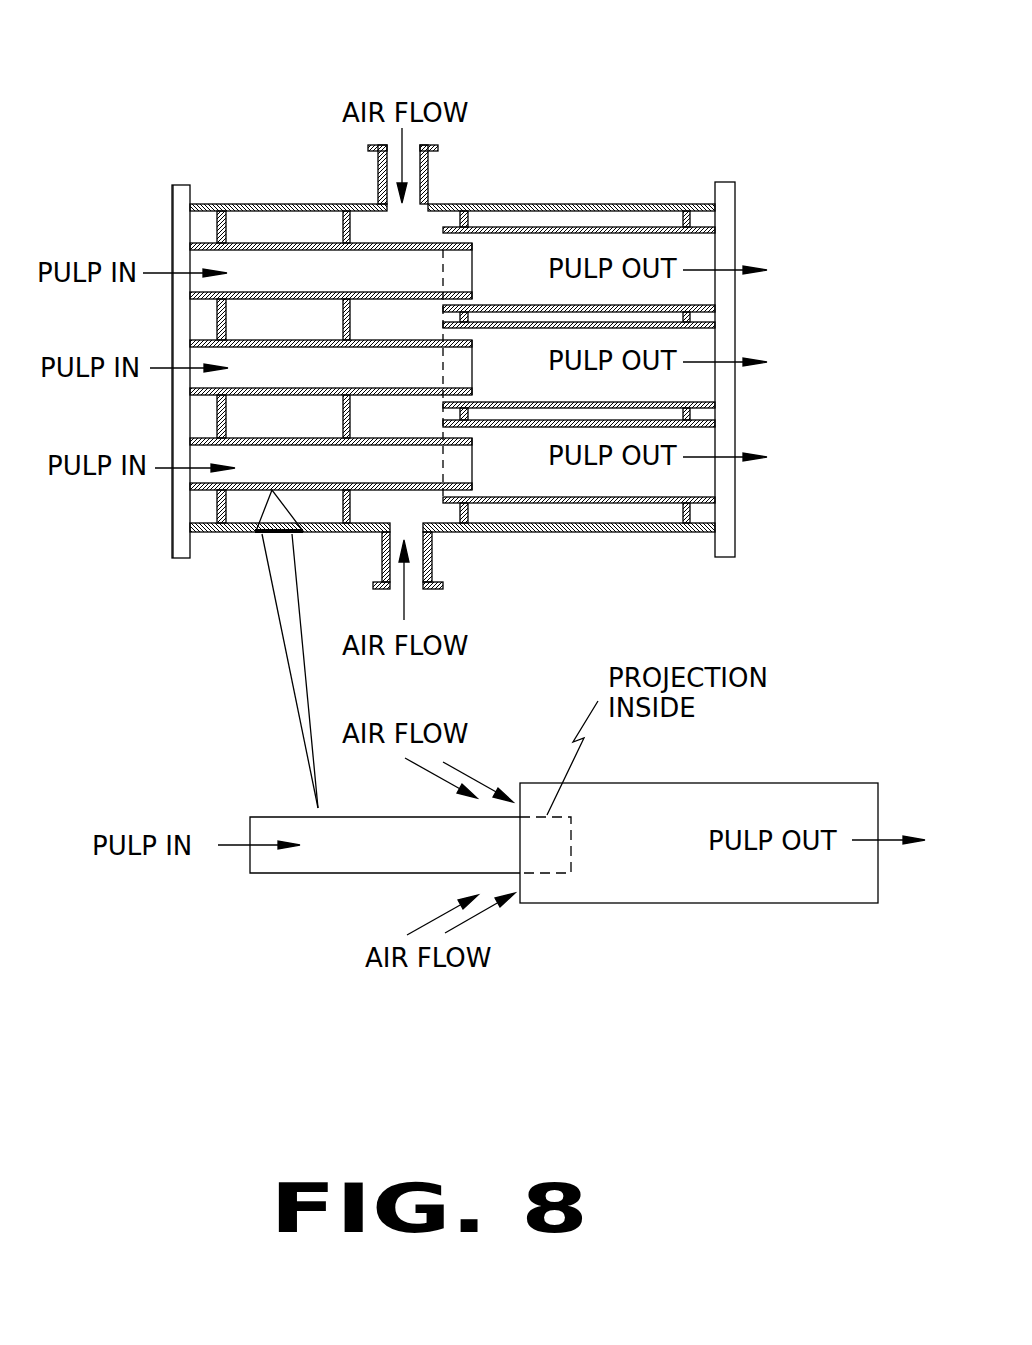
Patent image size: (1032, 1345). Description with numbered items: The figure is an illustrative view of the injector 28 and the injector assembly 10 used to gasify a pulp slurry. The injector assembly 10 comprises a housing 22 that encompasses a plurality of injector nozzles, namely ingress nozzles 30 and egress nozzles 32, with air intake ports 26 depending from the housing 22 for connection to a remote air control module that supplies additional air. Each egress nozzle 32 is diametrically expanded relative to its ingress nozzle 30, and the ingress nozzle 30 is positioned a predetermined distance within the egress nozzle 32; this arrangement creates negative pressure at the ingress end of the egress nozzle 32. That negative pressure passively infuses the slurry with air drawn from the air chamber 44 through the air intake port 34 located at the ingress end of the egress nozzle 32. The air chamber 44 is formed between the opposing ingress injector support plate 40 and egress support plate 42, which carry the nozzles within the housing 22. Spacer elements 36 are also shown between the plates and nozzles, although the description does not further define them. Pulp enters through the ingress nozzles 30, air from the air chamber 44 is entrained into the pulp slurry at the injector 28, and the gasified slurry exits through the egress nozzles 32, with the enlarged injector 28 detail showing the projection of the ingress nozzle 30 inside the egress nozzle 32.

The injector assembly 10 is at (797, 145).
The housing 22 is at (203, 204).
The air intake port 26 is at (378, 175).
The injector 28 is at (801, 707).
The ingress nozzle 30 is at (245, 490).
The egress nozzle 32 is at (580, 505).
The air intake port 34 is at (445, 243).
The spacer partition 36 is at (343, 228).
The ingress injector support plate 40 is at (334, 204).
The egress support plate 42 is at (468, 222).
The air chamber 44 is at (363, 498).